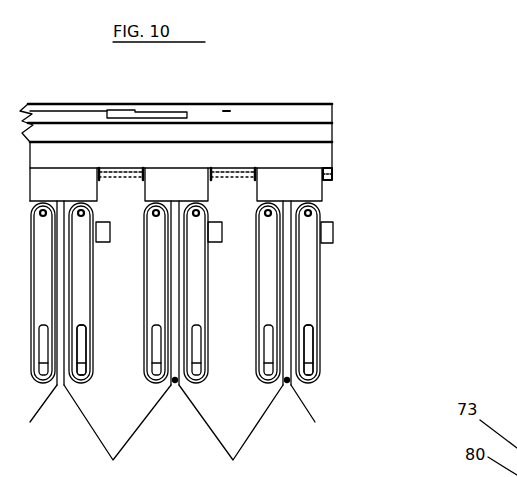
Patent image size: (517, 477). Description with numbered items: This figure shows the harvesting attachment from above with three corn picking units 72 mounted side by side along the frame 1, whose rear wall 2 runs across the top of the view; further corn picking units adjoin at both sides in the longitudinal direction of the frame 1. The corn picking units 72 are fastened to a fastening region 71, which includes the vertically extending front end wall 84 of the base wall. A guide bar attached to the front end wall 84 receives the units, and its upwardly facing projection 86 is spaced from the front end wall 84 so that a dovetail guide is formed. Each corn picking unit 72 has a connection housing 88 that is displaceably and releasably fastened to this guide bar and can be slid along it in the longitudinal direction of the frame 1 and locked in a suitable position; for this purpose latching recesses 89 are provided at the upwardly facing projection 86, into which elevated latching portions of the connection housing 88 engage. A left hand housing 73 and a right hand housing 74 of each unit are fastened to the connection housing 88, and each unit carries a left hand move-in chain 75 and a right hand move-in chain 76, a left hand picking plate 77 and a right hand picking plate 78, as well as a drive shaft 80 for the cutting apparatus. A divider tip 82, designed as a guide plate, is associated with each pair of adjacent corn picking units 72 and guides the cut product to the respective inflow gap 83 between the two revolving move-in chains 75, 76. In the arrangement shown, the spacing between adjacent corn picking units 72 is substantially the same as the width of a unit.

The frame 1 is at (333, 80).
The rear wall 2 is at (290, 88).
The fastening region 71 is at (372, 177).
The corn picking unit 72 is at (372, 288).
The left hand housing 73 is at (258, 200).
The right hand housing 74 is at (317, 207).
The left hand move-in chain 75 is at (279, 262).
The right hand move-in chain 76 is at (320, 268).
The left hand picking plate 77 is at (283, 300).
The right hand picking plate 78 is at (321, 328).
The drive shaft 80 is at (330, 230).
The divider tip 82 is at (92, 430).
The inflow gap 83 is at (175, 383).
The front end wall 84 is at (308, 168).
The upwardly facing projection 86 is at (332, 174).
The connection housing 88 is at (58, 182).
The latching recess 89 is at (237, 167).